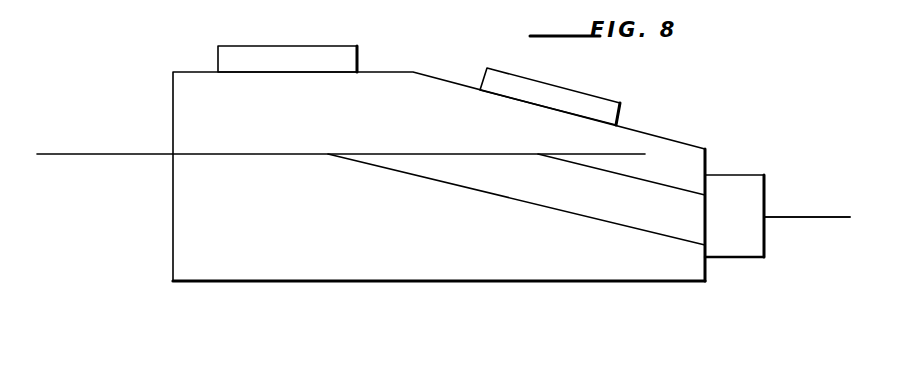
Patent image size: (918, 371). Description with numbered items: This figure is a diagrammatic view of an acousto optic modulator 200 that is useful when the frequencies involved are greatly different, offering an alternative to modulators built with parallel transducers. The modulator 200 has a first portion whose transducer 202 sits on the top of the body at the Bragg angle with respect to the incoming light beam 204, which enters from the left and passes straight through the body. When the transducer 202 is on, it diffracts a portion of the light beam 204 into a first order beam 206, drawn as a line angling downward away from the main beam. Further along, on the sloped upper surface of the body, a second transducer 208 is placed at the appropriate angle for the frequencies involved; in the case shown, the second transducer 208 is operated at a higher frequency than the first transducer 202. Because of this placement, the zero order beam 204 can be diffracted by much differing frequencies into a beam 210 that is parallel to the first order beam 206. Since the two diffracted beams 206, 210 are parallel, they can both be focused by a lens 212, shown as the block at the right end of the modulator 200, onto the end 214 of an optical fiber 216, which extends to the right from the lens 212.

The modulator 200 is at (640, 300).
The transducer 202 is at (301, 46).
The light beam 204 is at (277, 154).
The first order beam 206 is at (482, 193).
The second transducer 208 is at (592, 80).
The beam 210 is at (630, 178).
The lens 212 is at (755, 258).
The end 214 is at (765, 208).
The optical fiber 216 is at (810, 218).